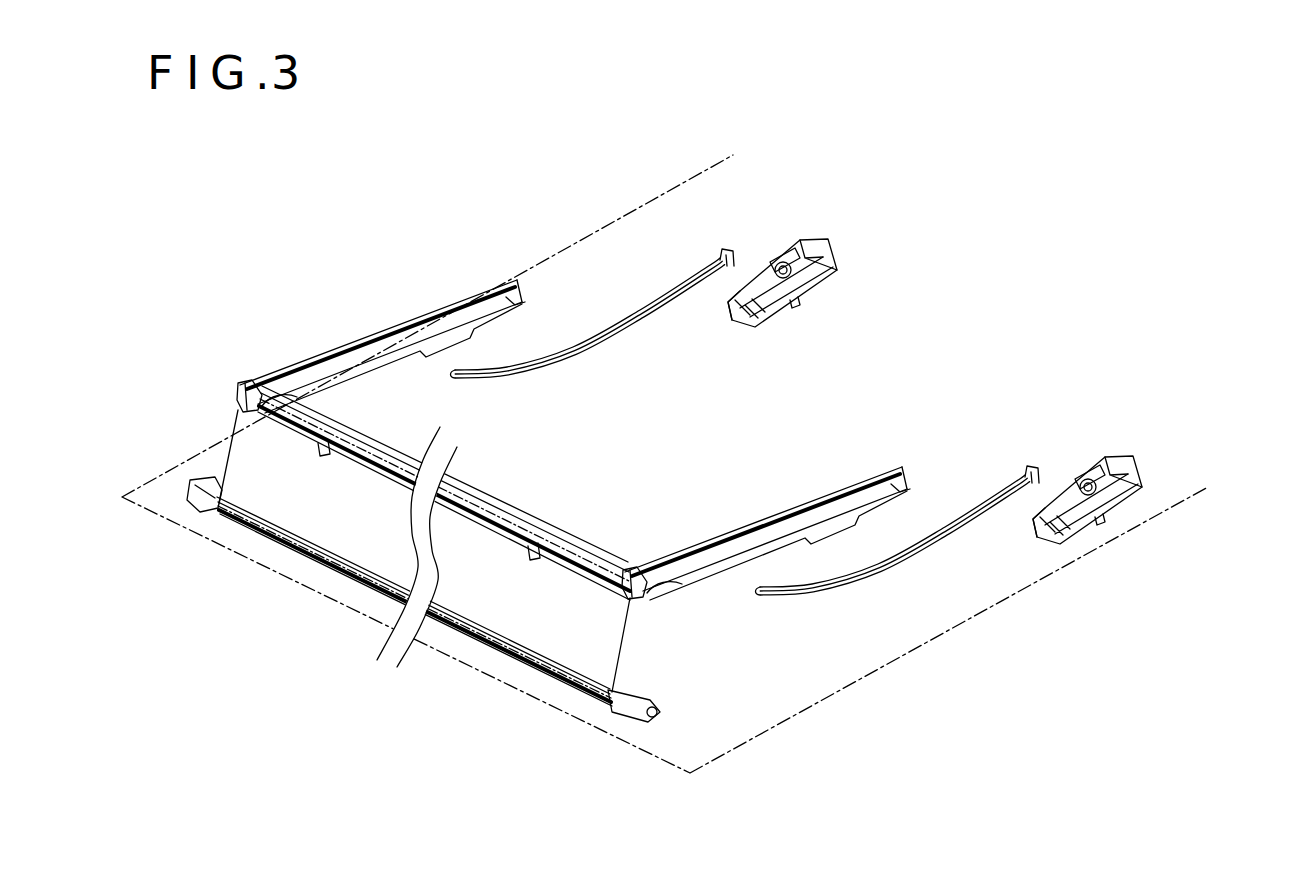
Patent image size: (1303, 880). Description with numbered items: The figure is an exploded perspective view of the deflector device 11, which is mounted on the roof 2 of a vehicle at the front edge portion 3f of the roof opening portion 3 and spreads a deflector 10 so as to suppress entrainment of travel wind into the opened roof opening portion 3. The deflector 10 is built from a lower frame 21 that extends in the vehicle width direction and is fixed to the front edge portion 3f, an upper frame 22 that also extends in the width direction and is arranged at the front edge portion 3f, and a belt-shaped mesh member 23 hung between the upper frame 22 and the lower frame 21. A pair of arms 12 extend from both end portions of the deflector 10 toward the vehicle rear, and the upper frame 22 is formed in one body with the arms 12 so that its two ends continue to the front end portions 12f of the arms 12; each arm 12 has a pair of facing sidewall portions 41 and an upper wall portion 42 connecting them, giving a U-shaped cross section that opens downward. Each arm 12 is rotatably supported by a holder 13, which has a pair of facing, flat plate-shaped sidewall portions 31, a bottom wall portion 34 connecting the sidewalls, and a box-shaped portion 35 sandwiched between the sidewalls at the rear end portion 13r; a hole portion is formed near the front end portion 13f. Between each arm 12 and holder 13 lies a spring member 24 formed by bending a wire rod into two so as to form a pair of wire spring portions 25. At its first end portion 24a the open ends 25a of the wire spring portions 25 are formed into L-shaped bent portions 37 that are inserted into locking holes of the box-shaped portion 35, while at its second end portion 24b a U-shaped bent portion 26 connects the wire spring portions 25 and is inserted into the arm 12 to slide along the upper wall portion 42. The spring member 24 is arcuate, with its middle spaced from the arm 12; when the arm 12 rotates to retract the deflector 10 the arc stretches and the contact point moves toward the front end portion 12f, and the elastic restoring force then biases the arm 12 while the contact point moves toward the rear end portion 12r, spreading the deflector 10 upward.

The roof 2 is at (665, 464).
The roof opening portion 3 is at (445, 640).
The front edge portion 3f is at (665, 464).
The deflector 10 is at (208, 416).
The deflector device 11 is at (146, 190).
The arm 12 is at (401, 322).
The front end portion of the arm 12f is at (242, 388).
The rear end portion of the arm 12r is at (517, 281).
The holder 13 is at (815, 295).
The front end portion of the holder 13f is at (733, 328).
The rear end portion of the holder 13r is at (827, 240).
The lower frame 21 is at (250, 540).
The upper frame 22 is at (480, 477).
The mesh member 23 is at (623, 657).
The spring member 24 is at (534, 380).
The first end portion 24a is at (934, 332).
The second end portion 24b is at (596, 505).
The wire spring portion 25 is at (592, 343).
The open end 25a is at (723, 246).
The bent portion 26 is at (453, 372).
The sidewall portion 31 is at (750, 277).
The bottom wall portion 34 is at (898, 457).
The box-shaped portion 35 is at (1029, 358).
The bent portion 37 is at (934, 332).
The sidewall portion 41 is at (410, 343).
The upper wall portion 42 is at (571, 433).